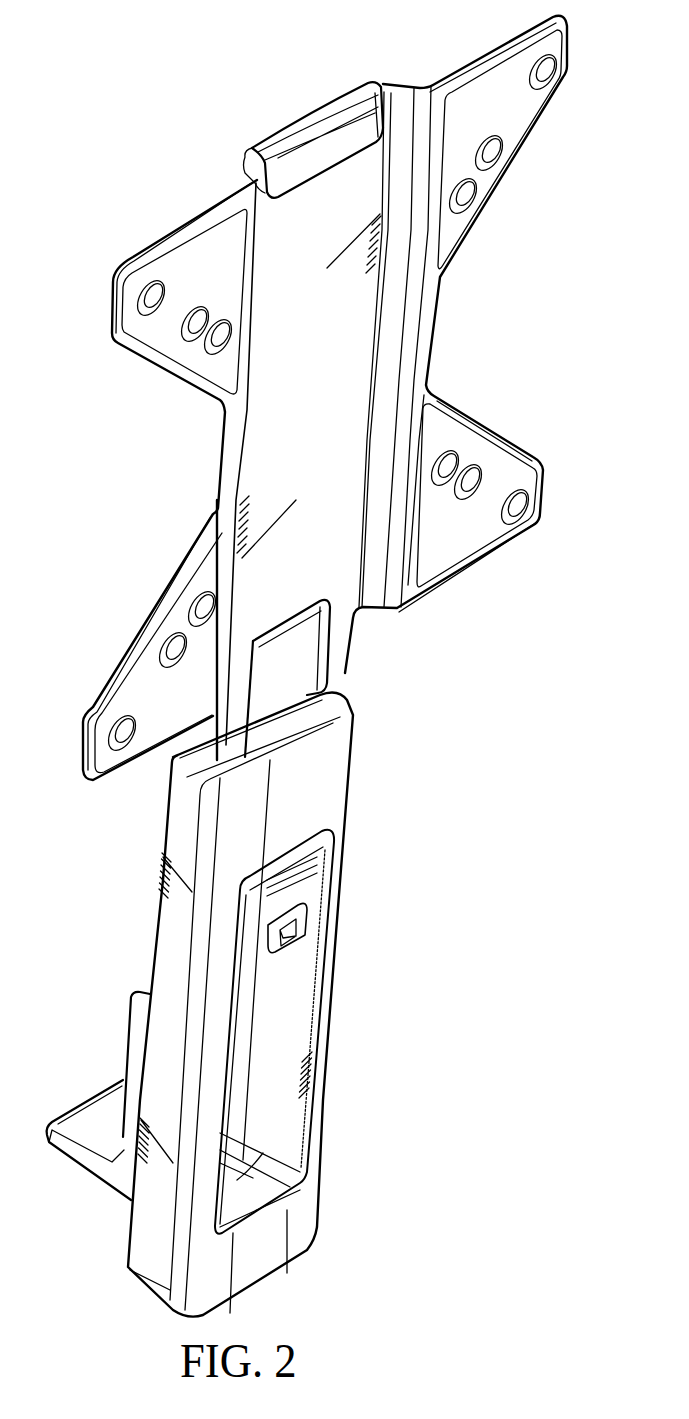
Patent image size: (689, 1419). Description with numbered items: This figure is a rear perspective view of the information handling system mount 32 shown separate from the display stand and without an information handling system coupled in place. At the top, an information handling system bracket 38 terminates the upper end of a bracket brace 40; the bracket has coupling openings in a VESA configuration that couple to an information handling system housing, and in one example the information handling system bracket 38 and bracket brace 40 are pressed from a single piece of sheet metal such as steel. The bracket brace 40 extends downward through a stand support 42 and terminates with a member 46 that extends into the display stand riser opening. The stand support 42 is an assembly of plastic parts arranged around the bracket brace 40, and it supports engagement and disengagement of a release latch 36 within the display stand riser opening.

The information handling system mount 32 is at (305, 661).
The release latch 36 is at (307, 1032).
The information handling system bracket 38 is at (325, 398).
The bracket brace 40 is at (328, 678).
The stand support 42 is at (224, 1004).
The member 46 is at (98, 1114).